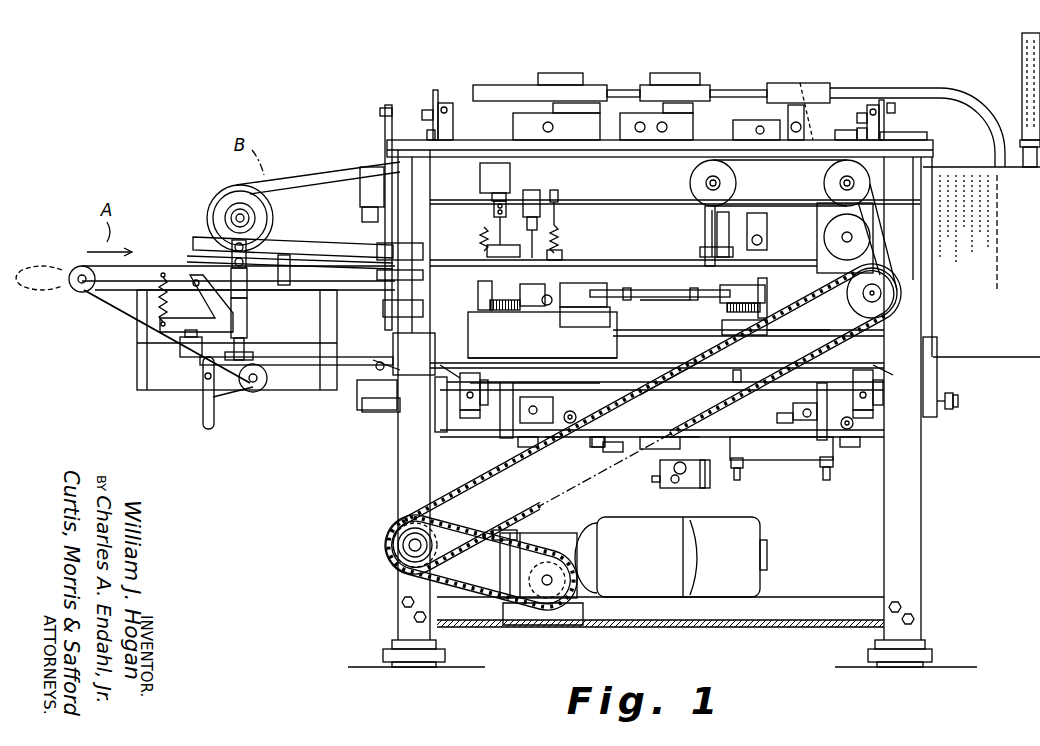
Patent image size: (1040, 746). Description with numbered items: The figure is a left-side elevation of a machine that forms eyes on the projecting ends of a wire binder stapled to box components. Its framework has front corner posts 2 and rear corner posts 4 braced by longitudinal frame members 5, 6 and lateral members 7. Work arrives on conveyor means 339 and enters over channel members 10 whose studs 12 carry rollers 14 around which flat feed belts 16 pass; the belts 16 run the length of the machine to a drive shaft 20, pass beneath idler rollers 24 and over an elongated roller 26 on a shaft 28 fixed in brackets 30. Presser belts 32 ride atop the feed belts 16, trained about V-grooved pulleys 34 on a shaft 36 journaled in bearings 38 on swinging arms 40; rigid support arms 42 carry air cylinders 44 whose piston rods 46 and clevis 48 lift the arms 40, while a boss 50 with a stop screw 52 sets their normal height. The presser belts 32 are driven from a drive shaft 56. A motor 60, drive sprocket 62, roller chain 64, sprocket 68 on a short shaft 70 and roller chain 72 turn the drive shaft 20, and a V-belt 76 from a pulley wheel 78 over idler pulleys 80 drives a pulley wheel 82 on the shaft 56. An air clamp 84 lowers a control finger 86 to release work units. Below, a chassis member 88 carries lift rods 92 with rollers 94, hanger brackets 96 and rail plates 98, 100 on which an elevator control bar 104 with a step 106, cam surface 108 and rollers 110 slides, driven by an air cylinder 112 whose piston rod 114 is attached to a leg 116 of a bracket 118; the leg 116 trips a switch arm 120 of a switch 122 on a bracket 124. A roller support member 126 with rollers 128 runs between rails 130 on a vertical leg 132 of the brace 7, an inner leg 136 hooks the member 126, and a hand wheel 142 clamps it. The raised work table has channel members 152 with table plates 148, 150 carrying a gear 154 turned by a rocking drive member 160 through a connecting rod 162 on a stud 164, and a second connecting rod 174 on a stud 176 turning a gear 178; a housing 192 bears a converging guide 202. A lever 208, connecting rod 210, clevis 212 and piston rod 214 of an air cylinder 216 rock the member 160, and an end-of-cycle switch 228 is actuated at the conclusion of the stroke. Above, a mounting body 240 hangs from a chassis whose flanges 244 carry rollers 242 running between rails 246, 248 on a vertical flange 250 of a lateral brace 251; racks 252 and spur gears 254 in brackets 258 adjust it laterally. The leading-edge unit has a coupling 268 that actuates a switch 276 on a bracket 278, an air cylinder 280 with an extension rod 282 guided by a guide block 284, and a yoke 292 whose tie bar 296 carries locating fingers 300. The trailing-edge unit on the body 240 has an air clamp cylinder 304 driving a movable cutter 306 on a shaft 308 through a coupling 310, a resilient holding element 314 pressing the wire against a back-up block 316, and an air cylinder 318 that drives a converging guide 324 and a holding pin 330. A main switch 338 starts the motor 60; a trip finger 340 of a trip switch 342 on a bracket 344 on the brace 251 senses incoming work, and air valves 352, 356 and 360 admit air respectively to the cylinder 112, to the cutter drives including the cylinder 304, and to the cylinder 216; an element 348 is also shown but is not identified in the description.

The corner posts 2 is at (398, 467).
The corner posts 4 is at (921, 493).
The longitudinal frame member 5 is at (767, 630).
The longitudinal frame member 6 is at (680, 403).
The lateral frame brace 7 is at (673, 359).
The channel members 10 is at (118, 298).
The short studs 12 is at (80, 290).
The rollers 14 is at (72, 288).
The flat feed belts 16 is at (145, 266).
The drive shaft 20 is at (880, 292).
The idler rollers 24 is at (253, 392).
The elongated roller 26 is at (359, 386).
The small diameter shaft 28 is at (414, 354).
The brackets 30 is at (425, 404).
The presser belts 32 is at (289, 178).
The V-grooved pulleys 34 is at (224, 187).
The shaft 36 is at (235, 220).
The bearings 38 is at (250, 222).
The parallel arms 40 is at (322, 240).
The rigid support arms 42 is at (330, 305).
The air cylinders 44 is at (247, 322).
The piston rods 46 is at (247, 290).
The clevis 48 is at (246, 258).
The boss 50 is at (247, 300).
The adjustable stop screw 52 is at (290, 272).
The drive shaft 56 is at (852, 237).
The motor 60 is at (650, 600).
The drive sprocket 62 is at (552, 627).
The roller chain 64 is at (482, 581).
The sprocket 68 is at (396, 569).
The short shaft 70 is at (394, 556).
The roller chain 72 is at (476, 480).
The V-belt 76 is at (875, 205).
The pulley wheel 78 is at (890, 300).
The idler pulleys 80 is at (714, 162).
The pulley wheel 82 is at (868, 243).
The air clamp 84 is at (180, 347).
The control finger 86 is at (170, 285).
The chassis member 88 is at (670, 371).
The lift rods 92 is at (513, 415).
The rollers 94 is at (553, 412).
The hanger brackets 96 is at (828, 488).
The rail plate 98 is at (595, 450).
The rail plate 100 is at (850, 450).
The elevator control bar 104 is at (622, 442).
The cutaway horizontal step 106 is at (532, 448).
The inclined cam surface 108 is at (552, 446).
The rollers 110 is at (570, 424).
The air cylinder 112 is at (800, 461).
The piston rod 114 is at (737, 481).
The depending leg 116 is at (705, 490).
The bracket 118 is at (692, 433).
The switch arm 120 is at (660, 472).
The electric switch 122 is at (657, 484).
The inverted T-shaped bracket 124 is at (657, 437).
The roller support member 126 is at (862, 367).
The spaced rollers 128 is at (460, 415).
The rails 130 is at (462, 395).
The vertical leg 132 is at (468, 418).
The inner leg 136 is at (830, 363).
The hand wheel 142 is at (958, 406).
The table plate element 148 is at (710, 322).
The table plate element 150 is at (794, 330).
The channel members 152 is at (630, 334).
The gear 154 is at (478, 312).
The rocking drive member 160 is at (660, 282).
The connecting rod 162 is at (540, 286).
The upstanding stud 164 is at (490, 303).
The second connecting rod 174 is at (664, 307).
The short stud 176 is at (765, 296).
The gear 178 is at (727, 308).
The housing 192 is at (778, 282).
The converging guide 202 is at (562, 256).
The short lever 208 is at (610, 316).
The connecting rod 210 is at (592, 375).
The clevis 212 is at (549, 375).
The piston rod 214 is at (509, 375).
The air cylinder 216 is at (401, 308).
The electric switch 228 is at (583, 287).
The mounting body 240 is at (534, 190).
The spaced rollers 242 is at (466, 94).
The flanges 244 is at (444, 104).
The rail 246 is at (430, 110).
The rail 248 is at (430, 130).
The vertical flange 250 is at (440, 108).
The lateral brace 251 is at (380, 112).
The racks 252 is at (862, 132).
The spur gears 254 is at (925, 138).
The brackets 258 is at (802, 92).
The coupling 268 is at (760, 202).
The electric switch 276 is at (767, 230).
The bracket 278 is at (763, 241).
The air cylinder 280 is at (717, 226).
The extension rod 282 is at (710, 224).
The guide block 284 is at (700, 252).
The yoke 292 is at (702, 204).
The tie bar 296 is at (657, 283).
The locating fingers 300 is at (708, 283).
The air clamp cylinder 304 is at (480, 172).
The movable cutter 306 is at (488, 246).
The operating shaft 308 is at (474, 187).
The coupling 310 is at (494, 208).
The resilient holding element 314 is at (415, 244).
The back-up block 316 is at (430, 270).
The air cylinder 318 is at (536, 194).
The converging guide 324 is at (558, 228).
The holding pin 330 is at (560, 245).
The main switch 338 is at (1002, 100).
The conveyor means 339 is at (43, 262).
The trip finger 340 is at (345, 268).
The in-feed sensing trip switch 342 is at (368, 170).
The bracket 344 is at (385, 133).
The bar 348 is at (542, 74).
The air valve 352 is at (752, 90).
The air valve 356 is at (654, 74).
The air valve 360 is at (372, 410).